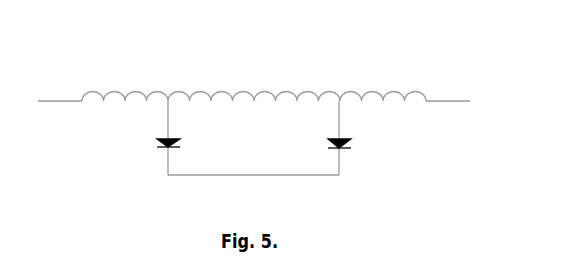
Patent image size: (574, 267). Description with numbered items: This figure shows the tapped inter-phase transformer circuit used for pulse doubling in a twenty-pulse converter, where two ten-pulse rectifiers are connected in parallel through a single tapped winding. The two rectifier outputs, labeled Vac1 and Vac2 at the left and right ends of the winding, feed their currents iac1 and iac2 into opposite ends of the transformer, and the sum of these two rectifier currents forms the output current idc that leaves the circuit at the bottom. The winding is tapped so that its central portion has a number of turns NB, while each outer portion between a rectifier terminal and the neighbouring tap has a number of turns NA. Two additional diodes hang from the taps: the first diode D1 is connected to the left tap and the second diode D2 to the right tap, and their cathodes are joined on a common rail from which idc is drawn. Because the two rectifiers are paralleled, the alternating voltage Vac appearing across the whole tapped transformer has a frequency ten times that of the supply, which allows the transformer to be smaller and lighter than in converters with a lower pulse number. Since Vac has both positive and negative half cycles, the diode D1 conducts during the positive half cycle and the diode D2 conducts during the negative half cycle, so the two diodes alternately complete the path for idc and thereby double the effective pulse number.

The number of turns NB is at (339, 68).
The number of turns NA is at (168, 124).
The voltage across the tapped inter-phase transformer Vac is at (470, 34).
The AC voltage terminal 1 Vac1 is at (60, 93).
The AC voltage terminal 2 Vac2 is at (448, 93).
The output current of the first rectifier iac1 is at (68, 110).
The output current of the second rectifier iac2 is at (470, 110).
The first diode D1 is at (181, 144).
The second diode D2 is at (328, 147).
The output current idc is at (253, 175).